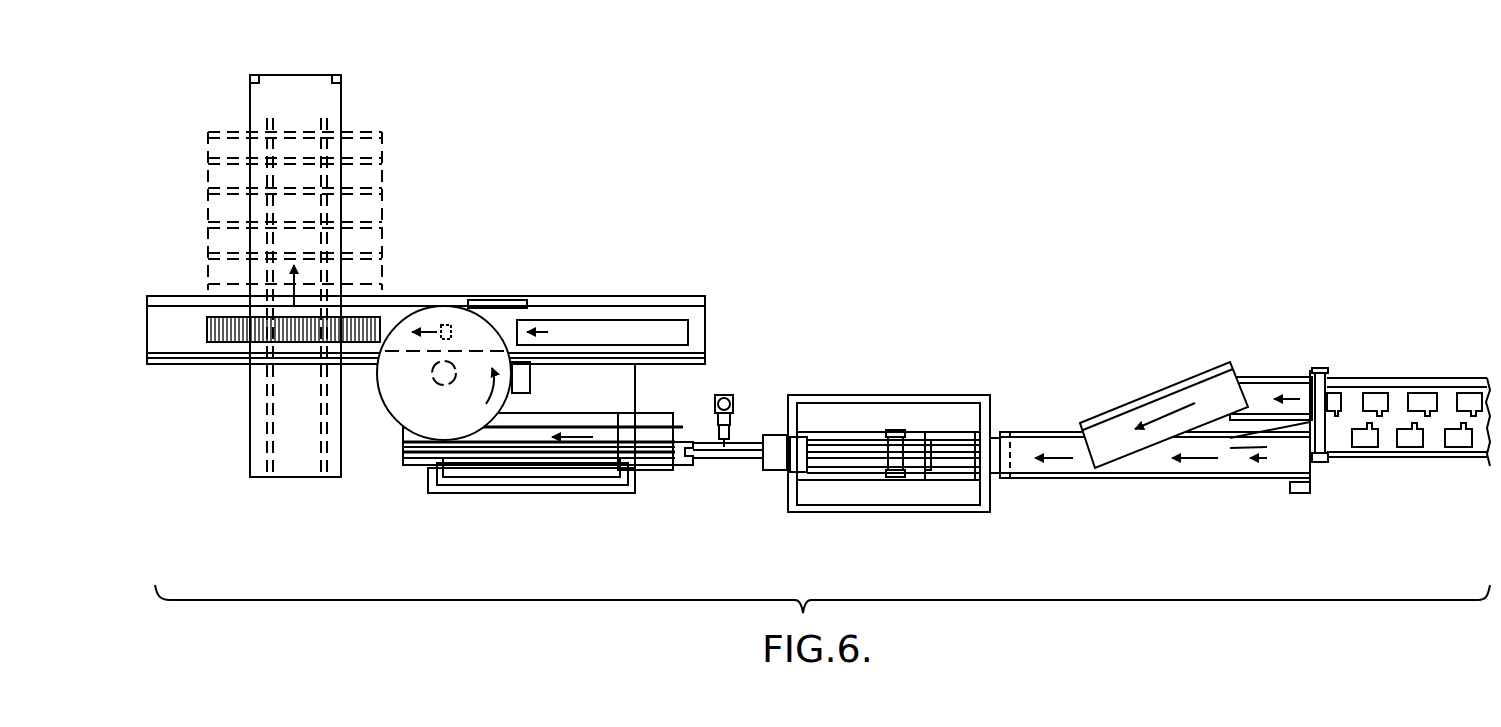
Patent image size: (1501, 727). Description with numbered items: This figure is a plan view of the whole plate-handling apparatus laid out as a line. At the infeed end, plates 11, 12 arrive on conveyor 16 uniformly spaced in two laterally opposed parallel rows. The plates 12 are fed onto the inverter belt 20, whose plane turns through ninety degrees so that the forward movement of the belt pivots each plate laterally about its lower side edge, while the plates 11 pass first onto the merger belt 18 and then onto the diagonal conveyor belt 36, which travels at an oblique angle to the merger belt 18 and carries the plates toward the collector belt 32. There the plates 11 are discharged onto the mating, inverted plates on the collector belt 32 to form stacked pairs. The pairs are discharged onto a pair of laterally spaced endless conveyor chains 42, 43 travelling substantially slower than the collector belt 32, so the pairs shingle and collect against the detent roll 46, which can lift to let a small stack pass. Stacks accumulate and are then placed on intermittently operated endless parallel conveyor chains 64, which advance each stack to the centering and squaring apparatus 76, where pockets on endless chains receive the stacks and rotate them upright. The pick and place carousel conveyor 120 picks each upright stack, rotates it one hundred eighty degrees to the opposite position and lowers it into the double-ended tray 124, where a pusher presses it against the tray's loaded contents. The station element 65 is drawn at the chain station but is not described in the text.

The plates 11 is at (1425, 395).
The plates 12 is at (1409, 440).
The conveyor 16 is at (1408, 412).
The merger belt 18 is at (1275, 388).
The inverter belt 20 is at (1278, 432).
The collector belt 32 is at (1228, 470).
The diagonal conveyor belt 36 is at (1193, 387).
The conveyor chain 42 is at (945, 472).
The conveyor chain 43 is at (965, 427).
The detent roll 46 is at (905, 438).
The endless parallel conveyor chains 64 is at (838, 467).
The upper station element 65 is at (851, 445).
The centering and squaring apparatus 76 is at (540, 497).
The pick and place carousel conveyor 120 is at (470, 320).
The double-ended tray 124 is at (235, 346).